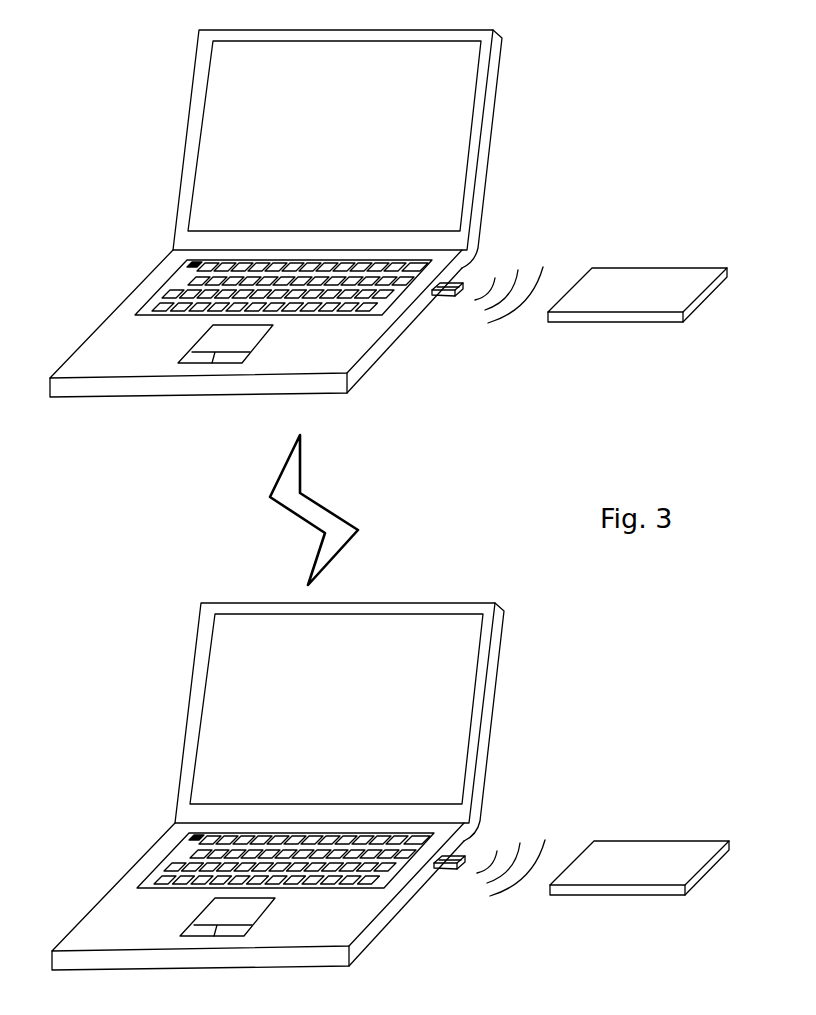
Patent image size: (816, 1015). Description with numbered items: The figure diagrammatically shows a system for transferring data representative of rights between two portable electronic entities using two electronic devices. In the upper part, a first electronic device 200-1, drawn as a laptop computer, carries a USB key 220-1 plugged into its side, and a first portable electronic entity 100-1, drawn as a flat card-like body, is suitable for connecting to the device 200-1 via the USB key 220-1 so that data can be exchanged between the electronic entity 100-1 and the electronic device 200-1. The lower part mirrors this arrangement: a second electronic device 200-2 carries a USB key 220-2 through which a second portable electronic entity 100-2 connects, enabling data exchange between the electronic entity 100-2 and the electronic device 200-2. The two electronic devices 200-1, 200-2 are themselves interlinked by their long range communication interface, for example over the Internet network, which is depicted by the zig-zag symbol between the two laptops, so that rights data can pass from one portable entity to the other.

The electronic device 200-1 is at (494, 111).
The USB key 220-1 is at (452, 297).
The electronic entity 100-1 is at (668, 268).
The electronic device 200-2 is at (503, 632).
The USB key 220-2 is at (454, 870).
The electronic entity 100-2 is at (665, 838).